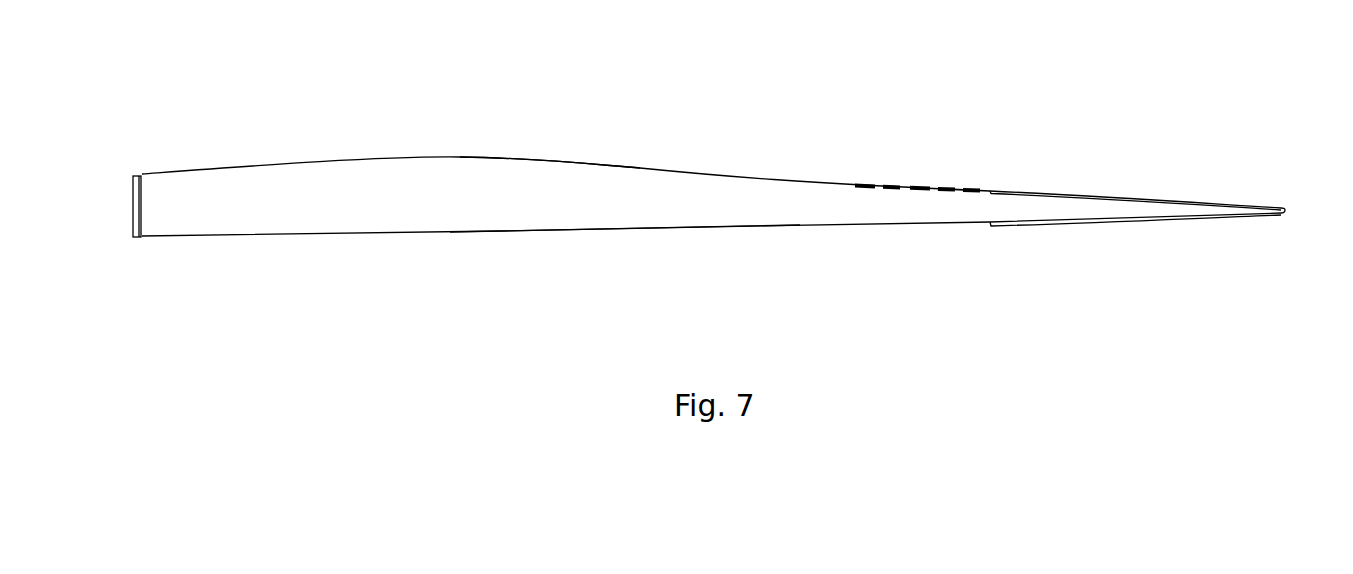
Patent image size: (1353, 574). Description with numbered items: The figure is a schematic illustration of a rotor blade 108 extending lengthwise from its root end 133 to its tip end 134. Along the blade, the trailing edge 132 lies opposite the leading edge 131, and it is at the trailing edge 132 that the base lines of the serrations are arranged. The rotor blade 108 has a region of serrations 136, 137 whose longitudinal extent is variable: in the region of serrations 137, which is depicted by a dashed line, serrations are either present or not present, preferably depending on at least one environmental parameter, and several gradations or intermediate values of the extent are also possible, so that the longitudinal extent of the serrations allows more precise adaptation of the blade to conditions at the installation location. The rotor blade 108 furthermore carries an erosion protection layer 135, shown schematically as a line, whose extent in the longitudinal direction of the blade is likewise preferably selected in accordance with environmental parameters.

The rotor blade 108 is at (437, 170).
The leading edge 131 is at (553, 233).
The trailing edge 132 is at (548, 160).
The root end 133 is at (132, 208).
The tip end 134 is at (1283, 211).
The erosion protection layer 135 is at (1110, 227).
The region of serrations 136 is at (1136, 195).
The region of serrations 137 is at (913, 175).